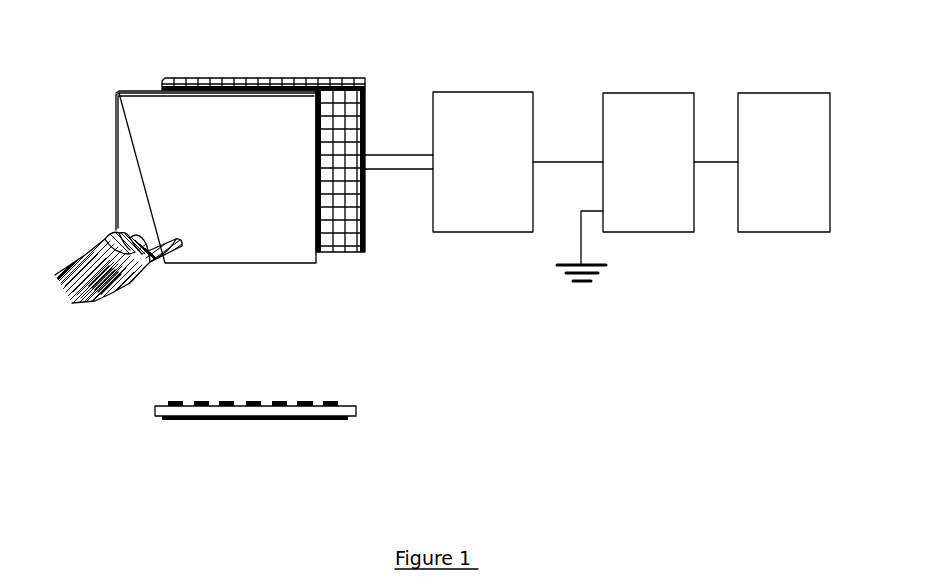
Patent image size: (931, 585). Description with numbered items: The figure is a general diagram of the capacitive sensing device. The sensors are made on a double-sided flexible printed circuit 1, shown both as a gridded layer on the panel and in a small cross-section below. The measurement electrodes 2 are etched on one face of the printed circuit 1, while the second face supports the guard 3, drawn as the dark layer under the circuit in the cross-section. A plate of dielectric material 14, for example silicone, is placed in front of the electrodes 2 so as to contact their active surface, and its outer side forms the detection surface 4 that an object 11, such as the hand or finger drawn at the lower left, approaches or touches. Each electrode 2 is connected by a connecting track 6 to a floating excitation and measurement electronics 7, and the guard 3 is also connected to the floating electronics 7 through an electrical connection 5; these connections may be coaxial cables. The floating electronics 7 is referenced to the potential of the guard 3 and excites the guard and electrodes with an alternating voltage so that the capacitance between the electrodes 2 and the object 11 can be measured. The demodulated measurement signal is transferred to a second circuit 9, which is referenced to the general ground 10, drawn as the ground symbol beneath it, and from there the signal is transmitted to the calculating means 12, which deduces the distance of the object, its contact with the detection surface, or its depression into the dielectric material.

The double-sided flexible printed circuit 1 is at (264, 84).
The measurement electrodes 2 is at (338, 84).
The guard 3 is at (288, 420).
The detection surface 4 is at (122, 172).
The electrical connection 5 is at (377, 152).
The connecting track 6 is at (421, 172).
The floating excitation and measurement electronics 7 is at (491, 92).
The second circuit 9 is at (671, 93).
The general ground 10 is at (578, 250).
The object 11 is at (76, 300).
The calculating means 12 is at (767, 93).
The plate of dielectric material 14 is at (140, 90).